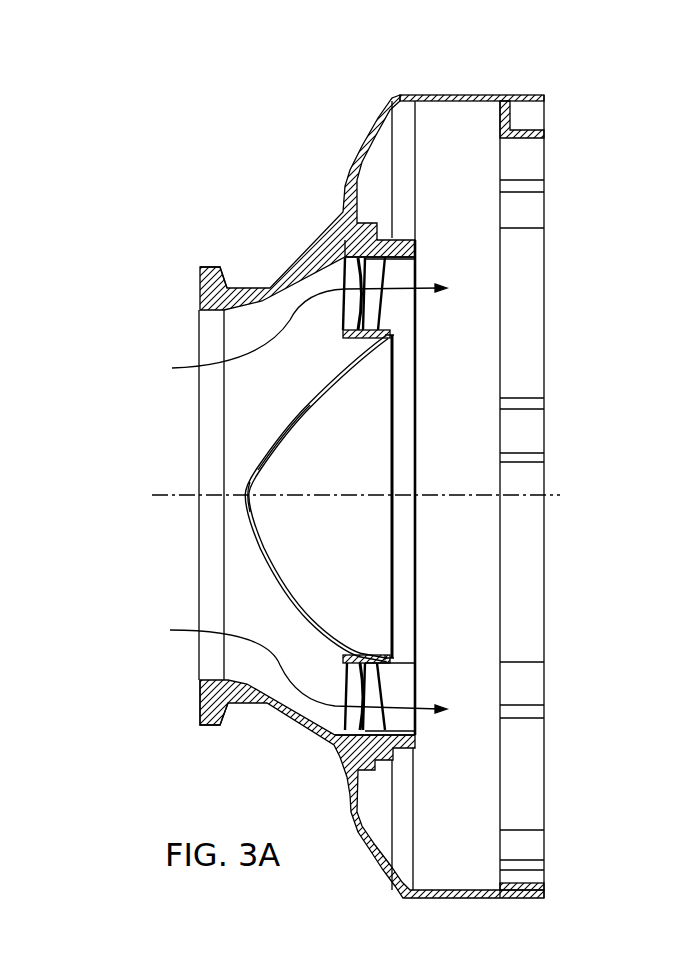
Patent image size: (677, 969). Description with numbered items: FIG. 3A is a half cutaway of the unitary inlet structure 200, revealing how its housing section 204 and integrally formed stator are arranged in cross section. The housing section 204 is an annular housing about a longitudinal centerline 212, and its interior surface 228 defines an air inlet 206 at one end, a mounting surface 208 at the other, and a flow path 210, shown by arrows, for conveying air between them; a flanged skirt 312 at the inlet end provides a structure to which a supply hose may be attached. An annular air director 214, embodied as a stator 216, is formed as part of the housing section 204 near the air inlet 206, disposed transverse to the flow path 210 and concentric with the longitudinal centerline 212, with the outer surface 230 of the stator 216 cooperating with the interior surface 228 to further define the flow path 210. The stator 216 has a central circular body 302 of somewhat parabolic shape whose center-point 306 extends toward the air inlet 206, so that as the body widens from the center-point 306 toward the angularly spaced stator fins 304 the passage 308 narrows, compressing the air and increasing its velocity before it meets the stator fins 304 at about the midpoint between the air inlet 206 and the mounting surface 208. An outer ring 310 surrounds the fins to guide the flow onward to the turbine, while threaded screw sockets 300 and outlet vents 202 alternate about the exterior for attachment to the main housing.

The unitary inlet structure 200 is at (252, 136).
The outlet vents 202 is at (282, 411).
The housing section 204 is at (355, 134).
The air inlet 206 is at (200, 349).
The mounting surface 208 is at (544, 97).
The flow path 210 is at (285, 498).
The longitudinal centerline 212 is at (333, 494).
The annular air director 214 is at (378, 546).
The stator 216 is at (378, 396).
The interior surface 228 is at (247, 682).
The outer surface 230 is at (300, 447).
The threaded screw sockets 300 is at (530, 110).
The central circular body 302 is at (280, 440).
The stator fins 304 is at (363, 312).
The center-point 306 is at (247, 500).
The passage 308 is at (338, 343).
The outer ring 310 is at (402, 240).
The flanged skirt 312 is at (210, 267).